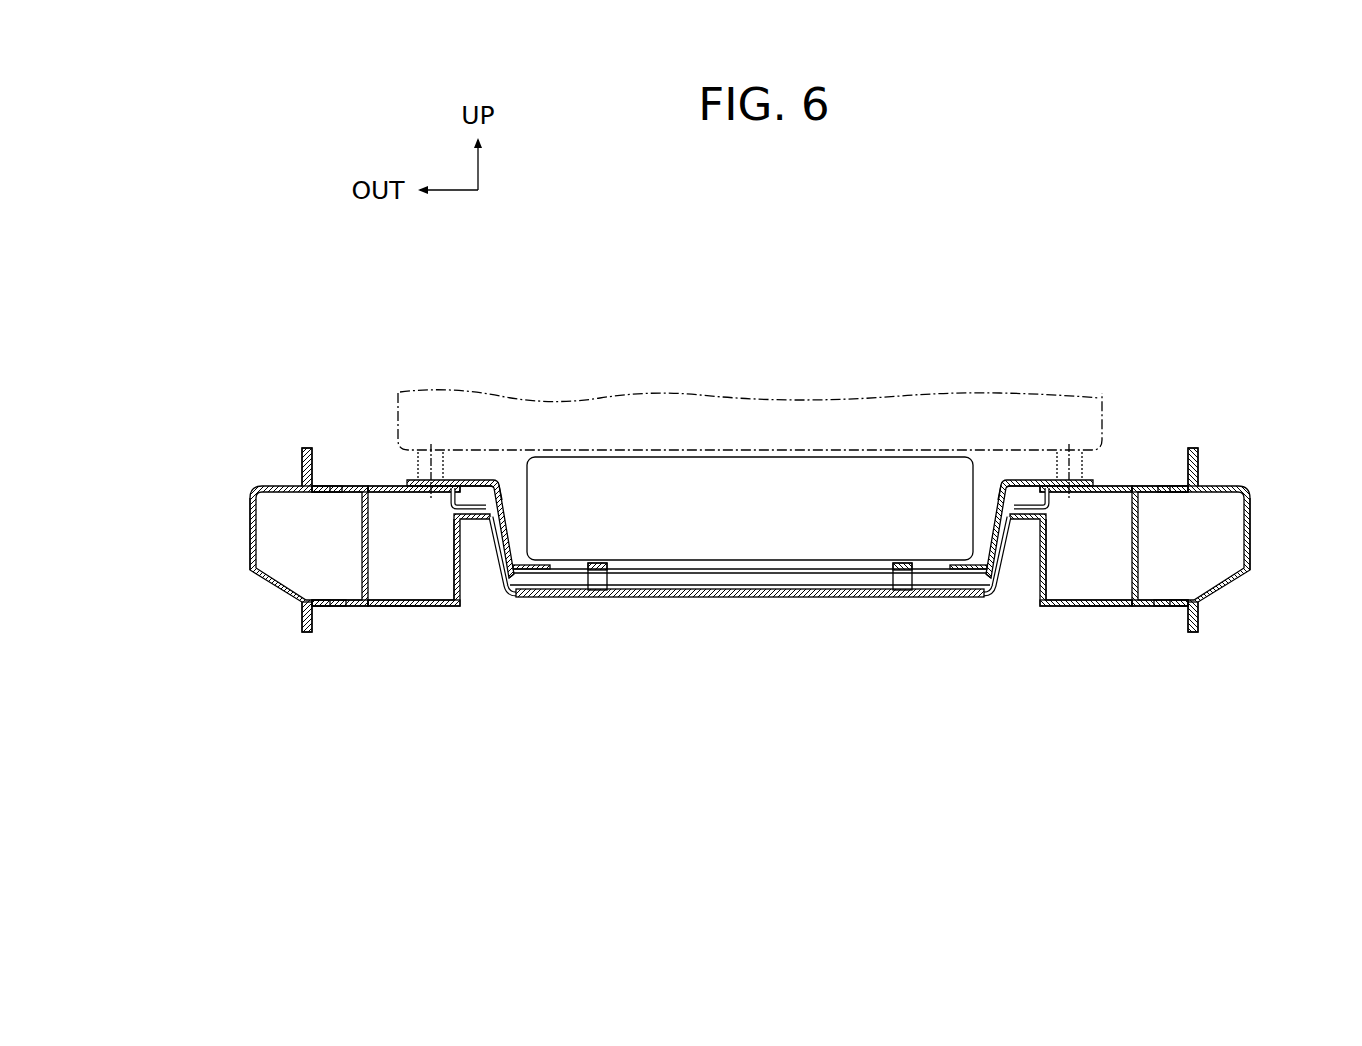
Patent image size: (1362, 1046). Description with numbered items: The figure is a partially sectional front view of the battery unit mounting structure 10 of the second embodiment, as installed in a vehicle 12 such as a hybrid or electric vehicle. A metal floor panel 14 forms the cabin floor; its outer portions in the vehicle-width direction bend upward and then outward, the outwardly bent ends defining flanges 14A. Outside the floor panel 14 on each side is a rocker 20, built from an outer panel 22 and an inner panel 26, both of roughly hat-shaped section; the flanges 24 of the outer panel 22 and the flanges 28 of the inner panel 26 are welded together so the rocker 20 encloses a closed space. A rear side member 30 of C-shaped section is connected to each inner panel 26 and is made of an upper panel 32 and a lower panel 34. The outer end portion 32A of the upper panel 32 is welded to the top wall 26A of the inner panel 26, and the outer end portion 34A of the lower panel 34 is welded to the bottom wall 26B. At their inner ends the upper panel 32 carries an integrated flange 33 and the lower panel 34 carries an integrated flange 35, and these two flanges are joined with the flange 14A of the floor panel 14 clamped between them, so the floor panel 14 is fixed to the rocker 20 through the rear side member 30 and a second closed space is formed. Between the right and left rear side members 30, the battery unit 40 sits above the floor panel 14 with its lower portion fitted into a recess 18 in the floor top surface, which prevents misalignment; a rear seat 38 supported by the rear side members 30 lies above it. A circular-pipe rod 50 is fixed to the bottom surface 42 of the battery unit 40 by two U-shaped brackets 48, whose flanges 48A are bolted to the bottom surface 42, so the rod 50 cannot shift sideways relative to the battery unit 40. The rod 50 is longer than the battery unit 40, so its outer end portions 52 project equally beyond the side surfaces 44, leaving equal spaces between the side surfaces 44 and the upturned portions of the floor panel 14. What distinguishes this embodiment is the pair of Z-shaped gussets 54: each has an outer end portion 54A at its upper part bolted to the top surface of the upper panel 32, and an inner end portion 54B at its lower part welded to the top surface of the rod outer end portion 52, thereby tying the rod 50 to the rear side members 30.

The battery unit mounting structure 10 is at (718, 710).
The vehicle 12 is at (655, 352).
The floor panel 14 is at (795, 598).
The flange 14A is at (495, 565).
The recess 18 is at (722, 588).
The rocker 20 is at (246, 494).
The outer panel 22 is at (255, 546).
The flange 24 is at (298, 455).
The inner panel 26 is at (370, 553).
The top wall 26A is at (318, 494).
The bottom wall 26B is at (318, 598).
The flange 28 is at (326, 482).
The rear side member 30 is at (397, 620).
The upper panel 32 is at (372, 484).
The outer end portion 32A is at (333, 486).
The flange 33 is at (474, 482).
The lower panel 34 is at (422, 612).
The outer end portion 34A is at (340, 612).
The flange 35 is at (466, 600).
The rear seat 38 is at (798, 396).
The battery unit 40 is at (713, 447).
The bottom surface 42 is at (820, 572).
The side surface 44 is at (498, 476).
The bracket 48 is at (598, 592).
The flange 48A is at (597, 562).
The rod 50 is at (663, 597).
The outer end portion 52 is at (488, 522).
The gusset 54 is at (494, 480).
The outer end portion 54A is at (409, 480).
The inner end portion 54B is at (516, 580).